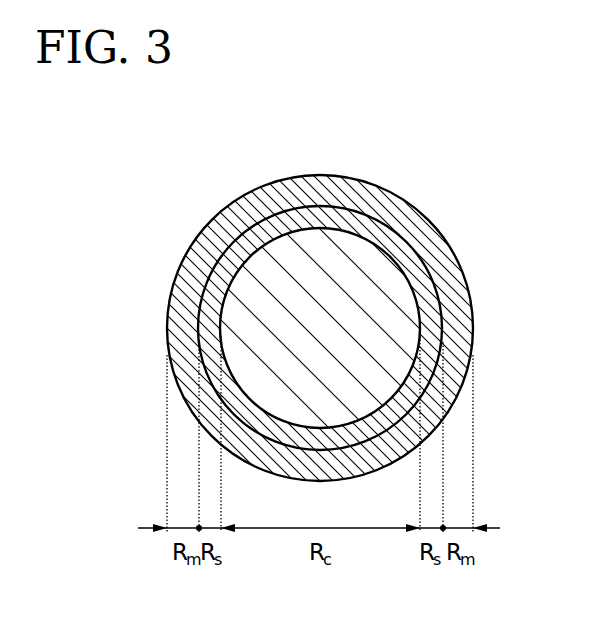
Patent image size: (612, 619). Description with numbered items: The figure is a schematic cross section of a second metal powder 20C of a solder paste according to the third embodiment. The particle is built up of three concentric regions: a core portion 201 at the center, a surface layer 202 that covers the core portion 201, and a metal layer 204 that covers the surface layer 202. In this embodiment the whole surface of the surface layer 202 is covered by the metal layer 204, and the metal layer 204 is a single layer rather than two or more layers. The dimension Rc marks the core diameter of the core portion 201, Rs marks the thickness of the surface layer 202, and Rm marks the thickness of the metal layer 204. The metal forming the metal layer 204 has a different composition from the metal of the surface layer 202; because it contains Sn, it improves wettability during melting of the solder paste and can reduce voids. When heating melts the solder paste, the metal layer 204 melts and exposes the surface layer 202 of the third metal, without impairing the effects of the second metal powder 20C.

The second metal powder 20C is at (432, 166).
The core portion 201 is at (253, 312).
The surface layer 202 is at (431, 310).
The metal layer 204 is at (461, 320).